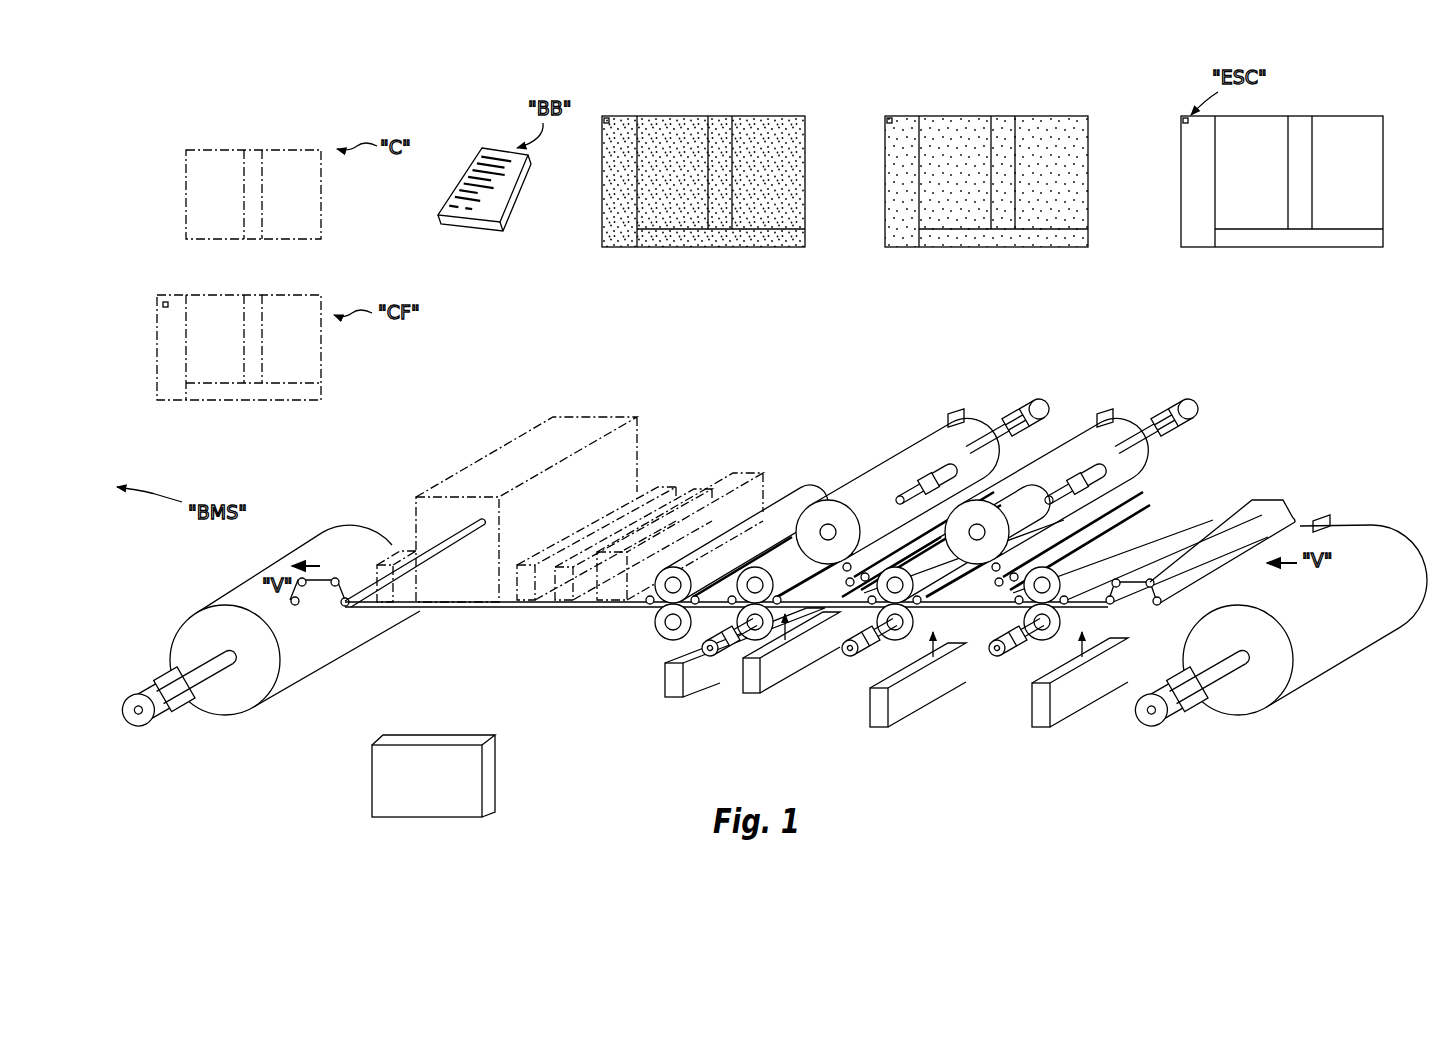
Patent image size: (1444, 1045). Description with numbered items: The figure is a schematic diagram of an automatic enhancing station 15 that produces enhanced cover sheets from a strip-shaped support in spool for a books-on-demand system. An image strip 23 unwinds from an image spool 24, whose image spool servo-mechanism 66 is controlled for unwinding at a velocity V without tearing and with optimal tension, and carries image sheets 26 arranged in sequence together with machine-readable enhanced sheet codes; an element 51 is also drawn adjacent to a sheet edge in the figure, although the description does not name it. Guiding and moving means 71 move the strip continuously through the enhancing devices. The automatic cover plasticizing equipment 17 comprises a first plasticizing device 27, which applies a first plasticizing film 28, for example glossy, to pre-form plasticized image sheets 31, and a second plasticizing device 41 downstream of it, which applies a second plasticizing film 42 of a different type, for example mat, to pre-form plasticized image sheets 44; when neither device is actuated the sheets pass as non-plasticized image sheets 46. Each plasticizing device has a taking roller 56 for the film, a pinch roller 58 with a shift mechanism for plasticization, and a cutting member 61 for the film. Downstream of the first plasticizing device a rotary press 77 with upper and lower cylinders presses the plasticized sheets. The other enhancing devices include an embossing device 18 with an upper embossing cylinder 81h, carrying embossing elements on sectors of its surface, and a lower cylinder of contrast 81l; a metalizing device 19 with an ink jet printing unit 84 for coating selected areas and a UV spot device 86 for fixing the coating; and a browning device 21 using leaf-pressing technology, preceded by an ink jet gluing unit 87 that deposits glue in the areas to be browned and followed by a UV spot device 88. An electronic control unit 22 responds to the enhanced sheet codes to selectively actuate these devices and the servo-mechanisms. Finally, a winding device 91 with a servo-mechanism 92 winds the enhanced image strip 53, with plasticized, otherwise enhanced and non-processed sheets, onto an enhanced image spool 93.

The automatic enhancing station 15 is at (1224, 350).
The automatic cover plasticizing equipment 17 is at (946, 380).
The embossing device 18 is at (826, 468).
The metalizing device 19 is at (757, 448).
The browning device 21 is at (491, 496).
The electronic control unit 22 is at (508, 730).
The image strip 23 is at (1085, 495).
The image spool 24 is at (1278, 641).
The image sheets 26 is at (799, 117).
The first plasticizing device 27 is at (1164, 450).
The first plasticizing film 28 is at (1086, 125).
The plasticized image sheets 31 is at (1106, 110).
The second plasticizing device 41 is at (900, 442).
The second plasticizing film 42 is at (803, 125).
The plasticized image sheets 44 is at (821, 110).
The non-plasticized image sheets 46 is at (1303, 100).
The registration mark 51 is at (167, 298).
The enhanced image strip 53 is at (363, 597).
The taking roller 56 is at (870, 594).
The pinch roller 58 is at (897, 643).
The cutting member 61 is at (932, 548).
The image spool servo-mechanism 66 is at (1169, 724).
The guiding and moving means 71 is at (1294, 493).
The rotary press 77 is at (804, 684).
The upper embossing cylinder 81h is at (790, 495).
The lower cylinder of contrast 81l is at (672, 637).
The ink jet printing unit 84 is at (727, 480).
The UV spot device 86 is at (560, 607).
The ink jet gluing unit 87 is at (655, 485).
The UV spot device 88 is at (400, 590).
The winding device 91 is at (268, 616).
The servo-mechanism 92 is at (174, 729).
The enhanced image spool 93 is at (244, 700).